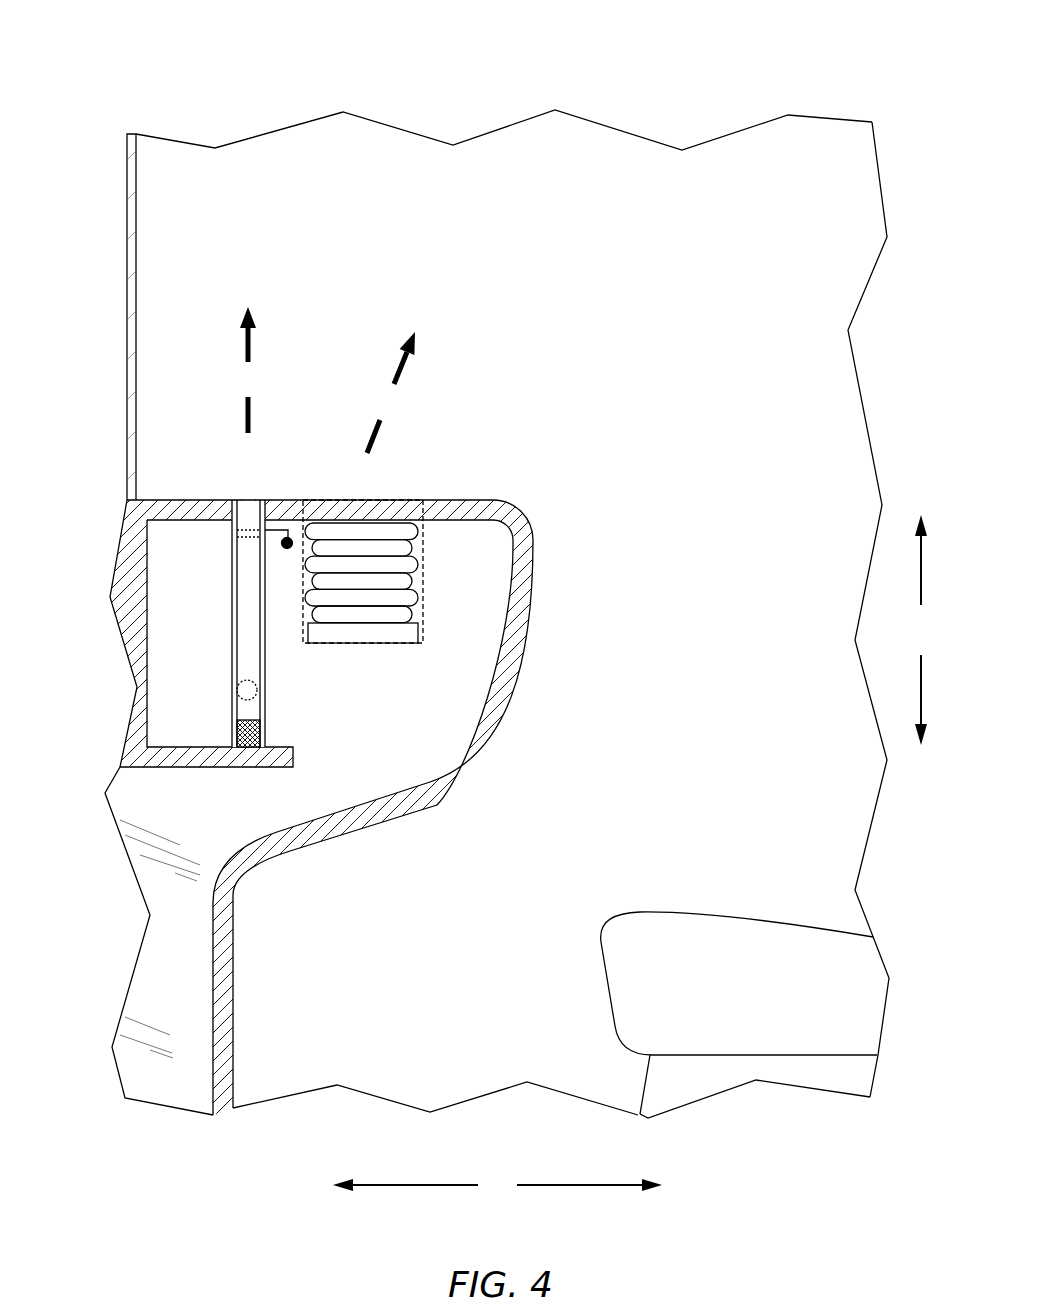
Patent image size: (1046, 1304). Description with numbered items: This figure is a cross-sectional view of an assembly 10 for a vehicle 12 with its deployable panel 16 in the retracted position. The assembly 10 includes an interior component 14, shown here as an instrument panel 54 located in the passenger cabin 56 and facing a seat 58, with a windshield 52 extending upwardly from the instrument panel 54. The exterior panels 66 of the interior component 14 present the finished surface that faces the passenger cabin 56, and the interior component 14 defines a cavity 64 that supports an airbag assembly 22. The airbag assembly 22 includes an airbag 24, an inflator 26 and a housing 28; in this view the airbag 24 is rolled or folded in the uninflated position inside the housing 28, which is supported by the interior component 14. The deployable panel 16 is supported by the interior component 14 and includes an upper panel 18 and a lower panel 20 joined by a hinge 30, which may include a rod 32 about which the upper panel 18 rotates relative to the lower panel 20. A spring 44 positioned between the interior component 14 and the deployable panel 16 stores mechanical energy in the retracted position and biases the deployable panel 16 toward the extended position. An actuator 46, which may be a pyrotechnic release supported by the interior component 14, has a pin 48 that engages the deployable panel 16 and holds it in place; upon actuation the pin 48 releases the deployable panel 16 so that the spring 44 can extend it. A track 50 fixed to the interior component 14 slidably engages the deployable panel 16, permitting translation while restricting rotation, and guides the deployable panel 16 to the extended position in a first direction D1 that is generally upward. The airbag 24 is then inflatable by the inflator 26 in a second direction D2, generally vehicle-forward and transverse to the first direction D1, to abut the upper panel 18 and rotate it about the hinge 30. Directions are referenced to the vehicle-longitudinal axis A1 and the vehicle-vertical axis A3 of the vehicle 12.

The assembly 10 is at (532, 392).
The vehicle 12 is at (697, 62).
The interior component 14 is at (352, 772).
The deployable panel 16 is at (234, 575).
The upper panel 18 is at (247, 590).
The lower panel 20 is at (248, 712).
The airbag assembly 22 is at (468, 610).
The airbag 24 is at (422, 545).
The inflator 26 is at (383, 637).
The housing 28 is at (396, 579).
The hinge 30 is at (262, 708).
The rod 32 is at (240, 688).
The spring 44 is at (267, 727).
The actuator 46 is at (287, 549).
The pin 48 is at (273, 520).
The track 50 is at (228, 632).
The windshield 52 is at (125, 243).
The instrument panel 54 is at (325, 948).
The passenger cabin 56 is at (393, 160).
The seat 58 is at (767, 915).
The cavity 64 is at (457, 707).
The exterior panel 66 is at (395, 500).
The first direction D1 is at (248, 370).
The second direction D2 is at (391, 392).
The vehicle-longitudinal axis A1 is at (497, 1185).
The vehicle-vertical axis A3 is at (921, 630).